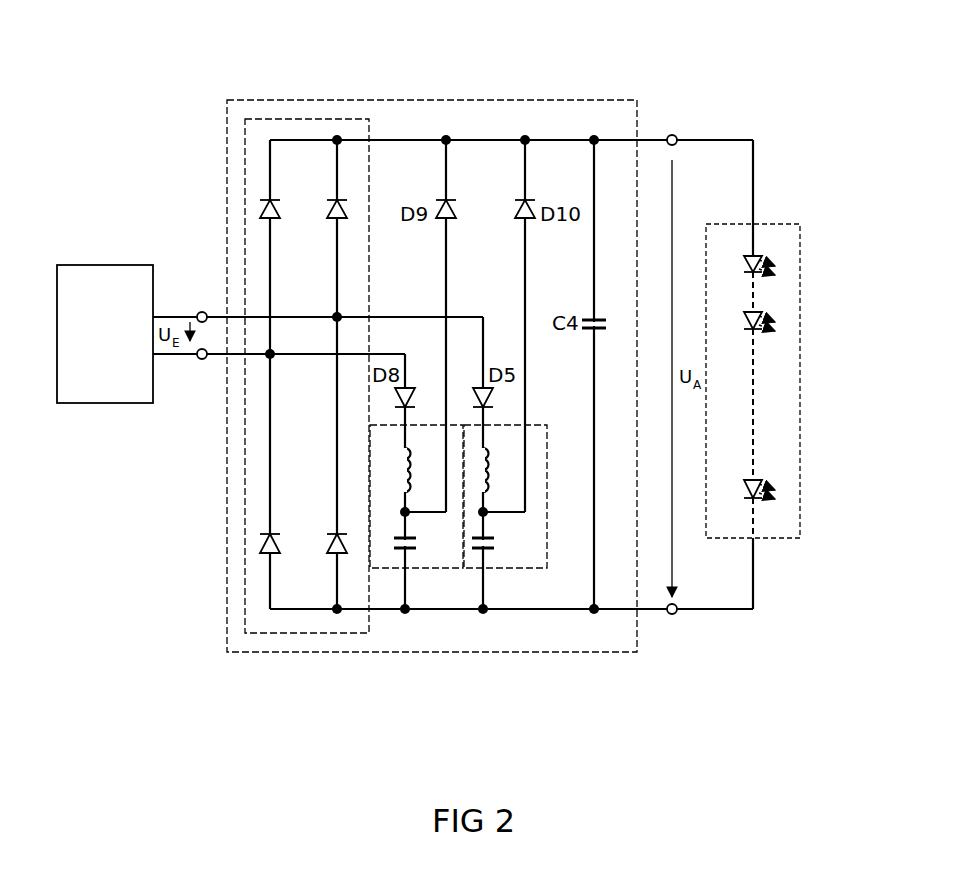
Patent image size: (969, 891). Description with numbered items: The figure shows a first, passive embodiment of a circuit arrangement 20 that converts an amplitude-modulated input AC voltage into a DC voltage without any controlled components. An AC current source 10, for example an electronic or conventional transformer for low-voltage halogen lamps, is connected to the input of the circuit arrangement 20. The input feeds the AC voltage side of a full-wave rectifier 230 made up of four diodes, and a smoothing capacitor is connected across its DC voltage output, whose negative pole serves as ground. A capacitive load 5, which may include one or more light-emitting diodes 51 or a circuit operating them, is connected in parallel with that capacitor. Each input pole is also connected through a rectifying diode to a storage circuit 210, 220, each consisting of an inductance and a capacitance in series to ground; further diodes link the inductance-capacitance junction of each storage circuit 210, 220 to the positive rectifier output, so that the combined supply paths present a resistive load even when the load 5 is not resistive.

The AC current source 10 is at (118, 345).
The circuit arrangement 20 is at (440, 100).
The full-wave rectifier 230 is at (305, 119).
The storage circuit 210 is at (422, 568).
The storage circuit 220 is at (515, 568).
The load 5 is at (780, 358).
The light-emitting diode 51 is at (754, 264).